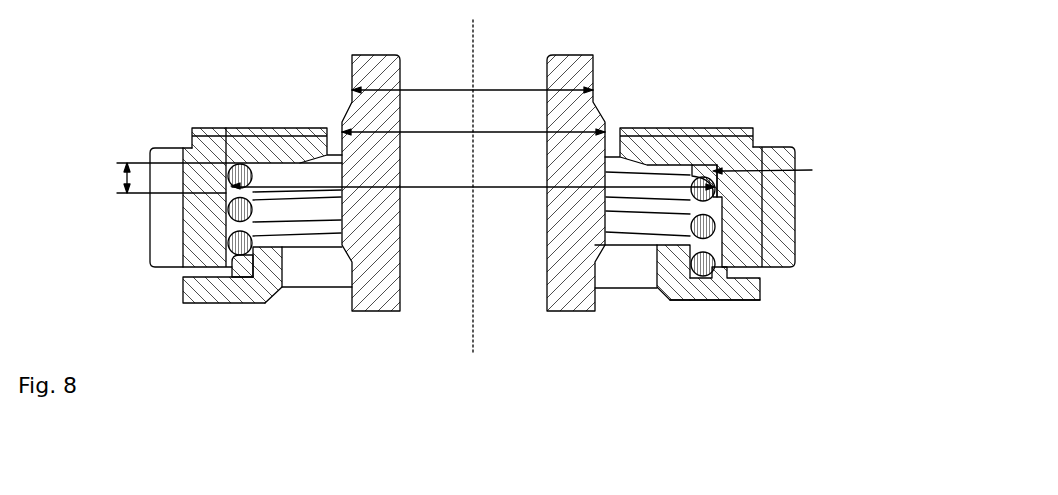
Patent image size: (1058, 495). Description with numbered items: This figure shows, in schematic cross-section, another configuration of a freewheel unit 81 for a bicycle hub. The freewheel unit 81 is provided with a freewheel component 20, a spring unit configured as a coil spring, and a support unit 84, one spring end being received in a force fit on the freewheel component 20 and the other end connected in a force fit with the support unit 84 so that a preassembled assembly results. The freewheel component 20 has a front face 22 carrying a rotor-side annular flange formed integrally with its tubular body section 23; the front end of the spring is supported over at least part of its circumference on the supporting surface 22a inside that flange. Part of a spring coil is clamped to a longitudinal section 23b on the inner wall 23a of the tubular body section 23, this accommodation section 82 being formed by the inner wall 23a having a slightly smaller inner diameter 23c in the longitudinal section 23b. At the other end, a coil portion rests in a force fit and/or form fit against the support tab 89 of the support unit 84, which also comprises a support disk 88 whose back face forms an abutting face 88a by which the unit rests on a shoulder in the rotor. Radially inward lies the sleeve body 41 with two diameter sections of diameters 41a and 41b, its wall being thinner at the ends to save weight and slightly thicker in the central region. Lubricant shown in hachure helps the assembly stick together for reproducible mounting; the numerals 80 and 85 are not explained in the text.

The rotor-side freewheel component 20 is at (195, 155).
The front face 22 is at (273, 127).
The supporting surface 22a is at (673, 173).
The tubular body section 23 is at (190, 231).
The inner wall 23a is at (780, 168).
The longitudinal section 23b is at (122, 180).
The inner diameter 23c is at (420, 189).
The sleeve body 41 is at (392, 63).
The diameter 41a is at (487, 88).
The diameter 41b is at (487, 130).
The second bearing assembly 80 is at (802, 119).
The freewheel unit 81 is at (133, 117).
The accommodation section 82 is at (230, 186).
The support unit 84 is at (166, 305).
The spacer block 85 is at (688, 268).
The support disk 88 is at (750, 293).
The abutting face 88a is at (715, 308).
The support tab 89 is at (272, 267).